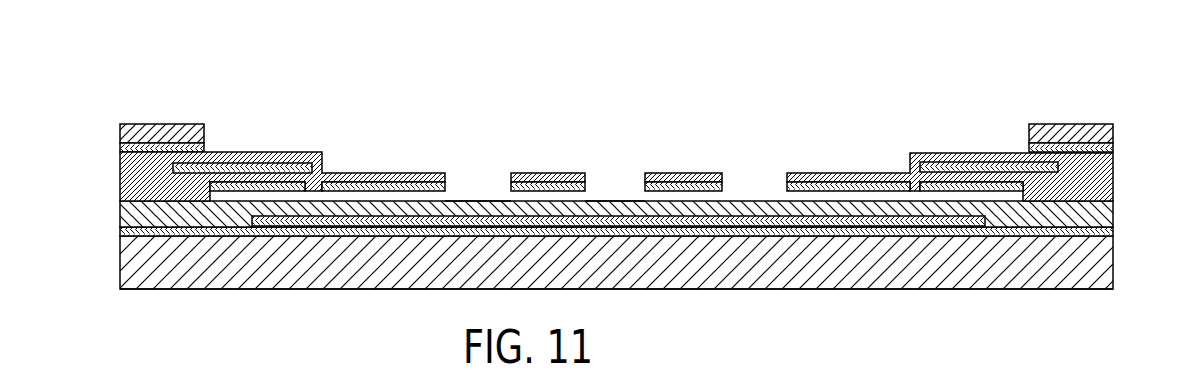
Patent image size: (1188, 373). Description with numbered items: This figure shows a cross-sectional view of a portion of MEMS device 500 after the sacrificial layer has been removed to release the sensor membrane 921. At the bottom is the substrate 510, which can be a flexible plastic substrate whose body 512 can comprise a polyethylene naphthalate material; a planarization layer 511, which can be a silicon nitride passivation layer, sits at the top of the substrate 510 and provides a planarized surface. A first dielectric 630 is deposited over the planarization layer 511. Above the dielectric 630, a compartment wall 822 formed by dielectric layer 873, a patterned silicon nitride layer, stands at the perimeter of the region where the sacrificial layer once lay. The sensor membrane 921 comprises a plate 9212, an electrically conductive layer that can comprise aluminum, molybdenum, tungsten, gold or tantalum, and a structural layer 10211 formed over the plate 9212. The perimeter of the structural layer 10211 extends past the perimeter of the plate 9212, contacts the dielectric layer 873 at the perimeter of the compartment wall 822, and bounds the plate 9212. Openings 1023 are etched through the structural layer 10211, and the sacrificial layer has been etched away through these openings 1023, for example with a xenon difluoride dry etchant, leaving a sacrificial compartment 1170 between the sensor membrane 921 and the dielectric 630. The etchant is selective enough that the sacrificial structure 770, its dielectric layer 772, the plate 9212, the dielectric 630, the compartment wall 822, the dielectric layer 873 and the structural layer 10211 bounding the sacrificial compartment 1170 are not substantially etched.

The MEMS device 500 is at (604, 192).
The substrate 510 is at (858, 275).
The planarization layer 511 is at (1113, 231).
The body 512 is at (958, 270).
The dielectric 630 is at (120, 214).
The sacrificial structure 770 is at (707, 139).
The dielectric layer 772 is at (258, 188).
The compartment wall 822 is at (120, 194).
The dielectric layer 873 is at (120, 182).
The sensor membrane 921 is at (950, 128).
The openings 1023 is at (478, 190).
The sacrificial compartment 1170 is at (590, 193).
The plate 9212 is at (448, 187).
The structural layer 10211 is at (388, 173).